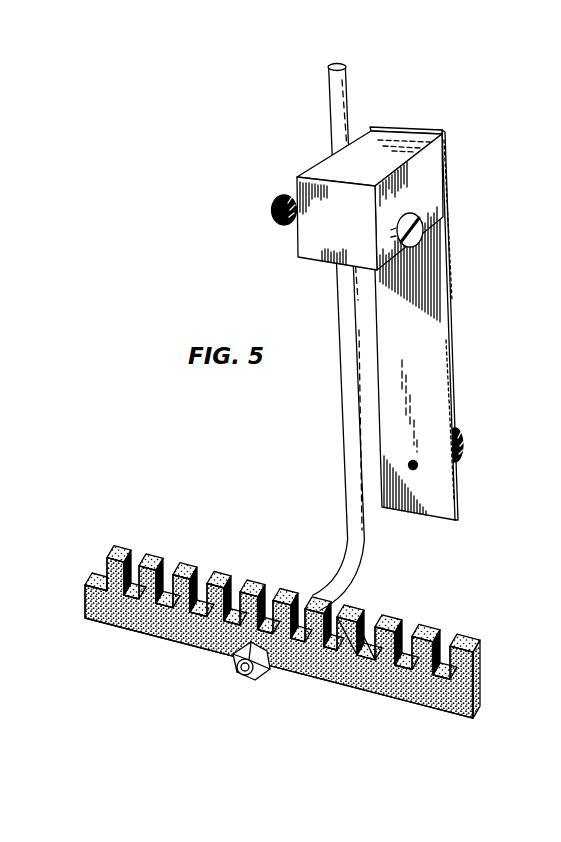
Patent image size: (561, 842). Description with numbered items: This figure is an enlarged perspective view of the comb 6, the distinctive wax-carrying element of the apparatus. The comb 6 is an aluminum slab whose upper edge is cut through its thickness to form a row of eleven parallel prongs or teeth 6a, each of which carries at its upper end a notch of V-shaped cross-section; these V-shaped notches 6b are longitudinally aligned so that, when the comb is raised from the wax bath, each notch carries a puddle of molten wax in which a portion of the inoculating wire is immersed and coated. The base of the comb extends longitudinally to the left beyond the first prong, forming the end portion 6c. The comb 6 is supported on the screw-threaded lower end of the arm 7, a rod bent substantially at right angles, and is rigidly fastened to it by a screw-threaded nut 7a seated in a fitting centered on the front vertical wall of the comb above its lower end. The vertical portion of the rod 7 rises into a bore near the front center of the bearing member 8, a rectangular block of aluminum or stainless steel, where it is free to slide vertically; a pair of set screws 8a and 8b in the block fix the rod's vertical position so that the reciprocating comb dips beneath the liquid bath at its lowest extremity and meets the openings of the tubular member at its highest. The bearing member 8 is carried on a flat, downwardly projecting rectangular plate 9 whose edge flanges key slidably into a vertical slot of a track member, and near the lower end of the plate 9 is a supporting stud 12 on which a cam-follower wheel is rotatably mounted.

The comb 6 is at (262, 616).
The prongs or teeth 6a is at (232, 590).
The V-shaped notches 6b is at (157, 560).
The end stop 6c is at (100, 578).
The arm 7 is at (332, 108).
The screw-threaded nut 7a is at (254, 682).
The bearing member 8 is at (427, 175).
The set screw 8a is at (273, 214).
The set screw 8b is at (421, 216).
The rectangular plate 9 is at (435, 375).
The supporting stud 12 is at (458, 452).